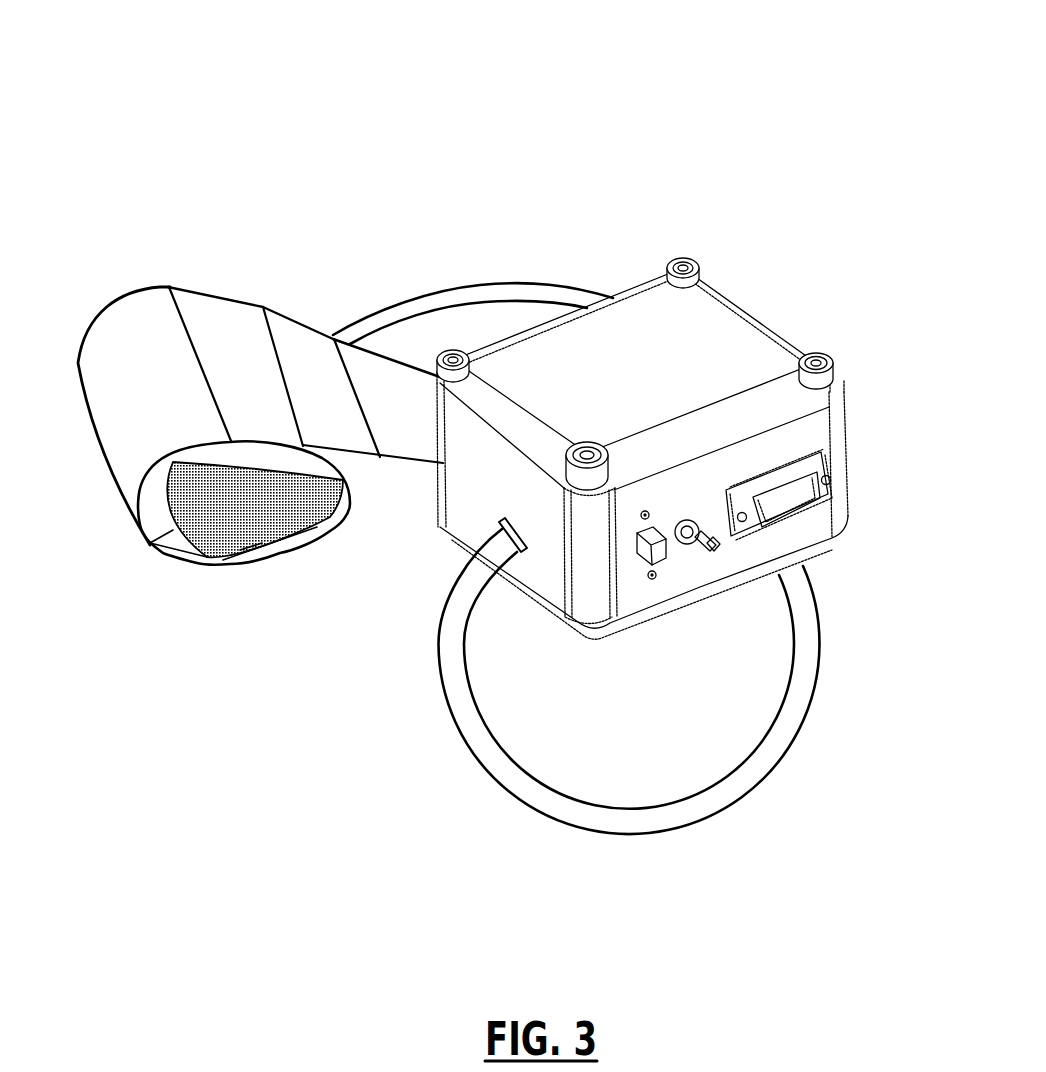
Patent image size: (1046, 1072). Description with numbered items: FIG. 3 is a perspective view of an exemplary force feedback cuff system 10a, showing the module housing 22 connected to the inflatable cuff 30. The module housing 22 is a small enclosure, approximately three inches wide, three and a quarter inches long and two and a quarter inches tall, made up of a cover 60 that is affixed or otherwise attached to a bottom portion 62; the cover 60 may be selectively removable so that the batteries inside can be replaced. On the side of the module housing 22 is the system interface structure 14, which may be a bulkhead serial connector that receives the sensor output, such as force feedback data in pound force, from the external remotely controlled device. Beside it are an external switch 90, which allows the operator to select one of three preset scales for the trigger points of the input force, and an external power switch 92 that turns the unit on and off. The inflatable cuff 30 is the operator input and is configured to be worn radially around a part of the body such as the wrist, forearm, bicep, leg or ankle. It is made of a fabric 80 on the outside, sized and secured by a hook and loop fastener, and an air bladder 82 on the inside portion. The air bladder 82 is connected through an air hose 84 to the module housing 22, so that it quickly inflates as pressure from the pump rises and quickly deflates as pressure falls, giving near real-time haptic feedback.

The force feedback cuff system 10a is at (559, 67).
The inflatable cuff 30 is at (213, 221).
The fabric 80 is at (212, 317).
The air bladder 82 is at (226, 564).
The air hose 84 is at (467, 288).
The module housing 22 is at (793, 333).
The cover 60 is at (722, 322).
The bottom portion 62 is at (845, 508).
The system interface structure 14 is at (822, 480).
The external switch 90 is at (693, 549).
The external power switch 92 is at (640, 549).